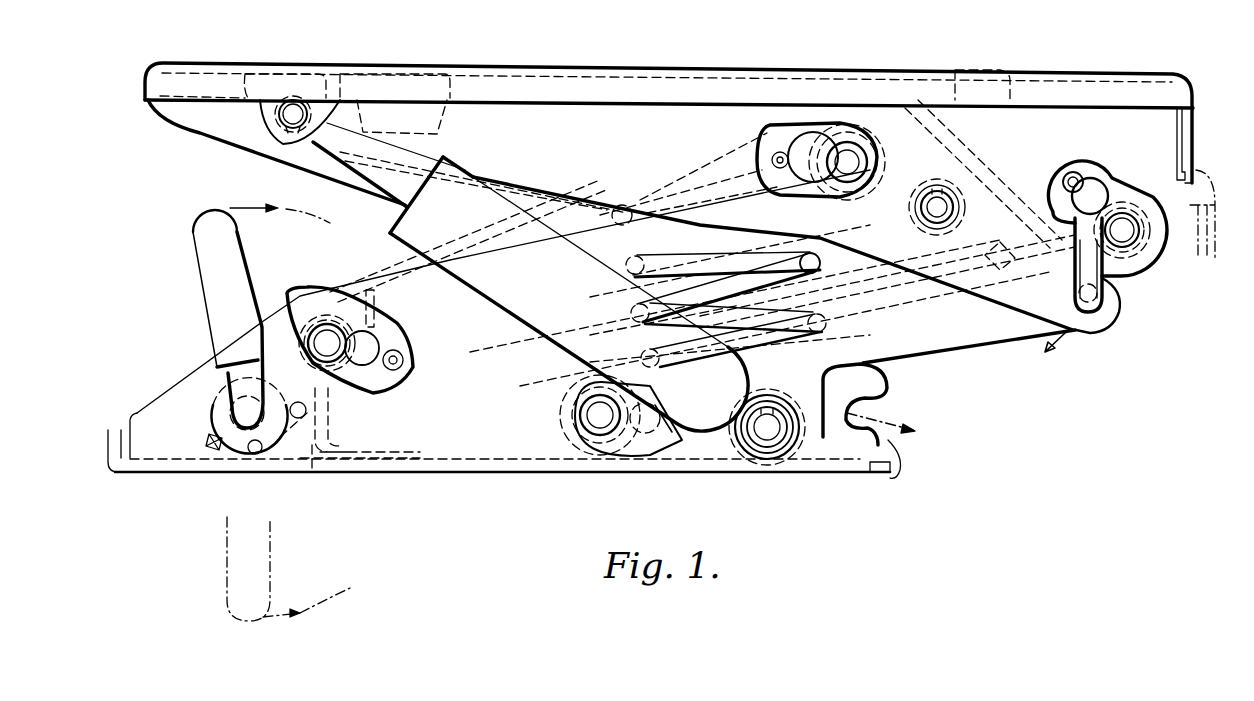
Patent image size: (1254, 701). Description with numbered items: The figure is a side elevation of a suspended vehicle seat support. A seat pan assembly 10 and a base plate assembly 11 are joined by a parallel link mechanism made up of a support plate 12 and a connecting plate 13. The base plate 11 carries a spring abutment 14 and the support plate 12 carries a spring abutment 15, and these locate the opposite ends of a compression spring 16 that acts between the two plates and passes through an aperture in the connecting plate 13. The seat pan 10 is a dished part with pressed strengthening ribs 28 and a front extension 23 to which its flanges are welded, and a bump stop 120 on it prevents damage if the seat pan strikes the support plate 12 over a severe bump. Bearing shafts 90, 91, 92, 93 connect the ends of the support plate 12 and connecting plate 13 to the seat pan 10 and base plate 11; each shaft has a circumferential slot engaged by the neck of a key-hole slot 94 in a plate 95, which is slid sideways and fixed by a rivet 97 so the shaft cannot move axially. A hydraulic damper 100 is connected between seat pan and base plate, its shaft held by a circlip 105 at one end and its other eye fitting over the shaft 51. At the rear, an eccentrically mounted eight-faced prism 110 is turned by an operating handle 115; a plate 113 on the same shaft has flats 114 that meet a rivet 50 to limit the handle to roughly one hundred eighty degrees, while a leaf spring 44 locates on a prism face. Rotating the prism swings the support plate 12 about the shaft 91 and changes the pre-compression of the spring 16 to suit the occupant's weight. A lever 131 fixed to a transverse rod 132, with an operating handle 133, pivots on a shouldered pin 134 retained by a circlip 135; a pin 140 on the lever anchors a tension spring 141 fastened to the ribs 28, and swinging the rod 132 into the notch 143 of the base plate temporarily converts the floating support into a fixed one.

The seat pan assembly 10 is at (588, 66).
The base plate assembly 11 is at (521, 478).
The support plate 12 is at (548, 210).
The connecting plate 13 is at (955, 336).
The spring abutment 14 is at (664, 442).
The spring abutment 15 is at (638, 204).
The compression spring 16 is at (818, 263).
The extension 23 is at (1190, 176).
The strengthening ribs 28 is at (472, 90).
The leaf spring 44 is at (350, 412).
The rivet 50 is at (313, 468).
The shaft 51 is at (766, 460).
The bearing shaft 90 is at (850, 160).
The bearing shaft 91 is at (325, 341).
The bearing shaft 92 is at (1130, 238).
The bearing shaft 93 is at (598, 413).
The key-hole slot 94 is at (365, 346).
The plate 95 is at (408, 366).
The rivet 97 is at (396, 358).
The hydraulic damper 100 is at (454, 192).
The circlip 105 is at (288, 116).
The prism 110 is at (215, 443).
The plate 113 is at (283, 460).
The flats 114 is at (209, 436).
The operating handle 115 is at (203, 279).
The bump stop 120 is at (440, 128).
The lever 131 is at (925, 400).
The transverse rod 132 is at (915, 426).
The operating handle 133 is at (1094, 190).
The shouldered pin 134 is at (942, 203).
The circlip 135 is at (927, 216).
The pin 140 is at (992, 286).
The tension spring 141 is at (945, 100).
The notch 143 is at (888, 447).